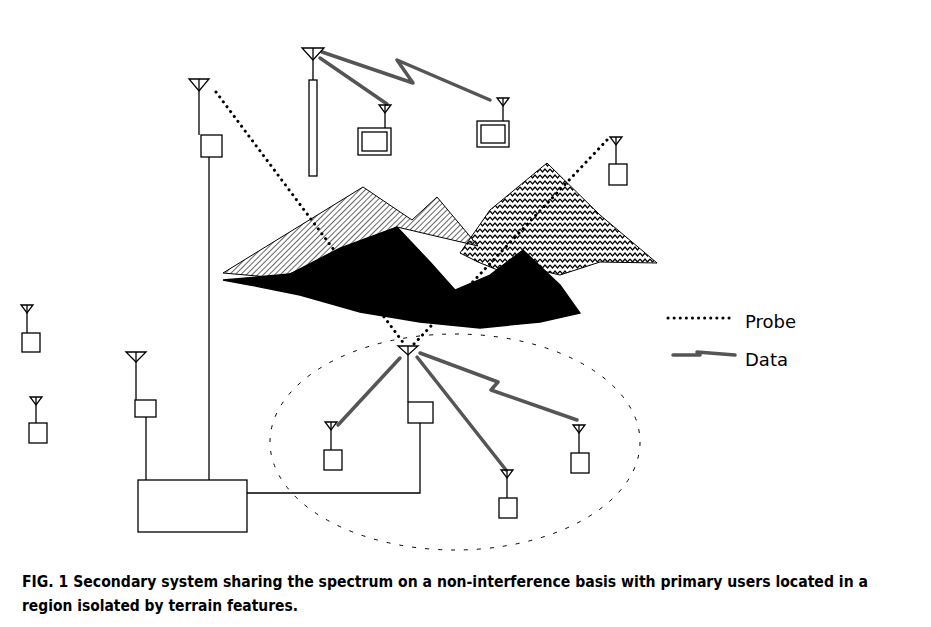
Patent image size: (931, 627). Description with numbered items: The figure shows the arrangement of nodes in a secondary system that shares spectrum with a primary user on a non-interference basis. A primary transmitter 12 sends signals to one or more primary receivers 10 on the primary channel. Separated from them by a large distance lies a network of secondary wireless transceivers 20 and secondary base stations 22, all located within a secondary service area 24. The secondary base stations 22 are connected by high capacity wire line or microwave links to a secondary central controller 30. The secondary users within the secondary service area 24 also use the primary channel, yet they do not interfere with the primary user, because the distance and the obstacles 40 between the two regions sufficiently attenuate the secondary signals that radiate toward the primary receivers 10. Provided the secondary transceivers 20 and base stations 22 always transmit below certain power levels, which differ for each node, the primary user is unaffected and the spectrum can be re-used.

The primary receiver 10 is at (392, 141).
The primary transmitter 12 is at (308, 90).
The secondary wireless transceiver 20 is at (40, 349).
The secondary base station 22 is at (197, 92).
The secondary service area 24 is at (655, 445).
The secondary central controller 30 is at (138, 497).
The obstacle 40 is at (622, 238).